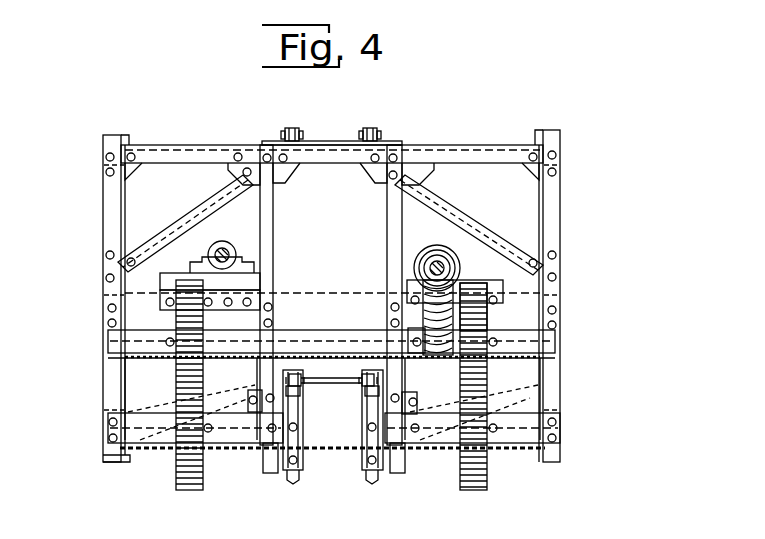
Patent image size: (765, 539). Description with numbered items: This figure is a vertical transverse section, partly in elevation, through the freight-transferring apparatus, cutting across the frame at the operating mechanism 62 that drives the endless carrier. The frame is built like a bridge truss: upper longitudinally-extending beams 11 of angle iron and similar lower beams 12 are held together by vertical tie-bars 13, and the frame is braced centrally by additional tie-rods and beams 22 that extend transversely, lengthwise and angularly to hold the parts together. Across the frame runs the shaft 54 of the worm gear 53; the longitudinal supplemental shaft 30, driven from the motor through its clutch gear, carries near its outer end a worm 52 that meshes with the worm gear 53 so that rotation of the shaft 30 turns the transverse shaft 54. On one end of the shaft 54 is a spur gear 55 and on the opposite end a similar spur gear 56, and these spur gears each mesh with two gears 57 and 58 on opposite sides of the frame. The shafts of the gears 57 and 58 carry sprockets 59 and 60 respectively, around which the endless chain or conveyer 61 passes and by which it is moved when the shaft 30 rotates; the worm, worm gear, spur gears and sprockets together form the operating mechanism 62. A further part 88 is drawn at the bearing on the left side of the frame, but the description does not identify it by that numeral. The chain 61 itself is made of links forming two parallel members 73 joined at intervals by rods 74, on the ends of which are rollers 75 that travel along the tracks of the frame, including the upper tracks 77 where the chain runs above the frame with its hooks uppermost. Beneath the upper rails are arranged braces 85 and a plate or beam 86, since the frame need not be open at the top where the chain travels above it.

The upper longitudinally-extending beams 11 is at (126, 140).
The lower beams 12 is at (124, 465).
The vertical tie-bars 13 is at (556, 213).
The tie-rods and beams 22 is at (175, 228).
The supplemental shaft 30 is at (445, 268).
The worm 52 is at (428, 250).
The worm gear 53 is at (425, 314).
The shaft of the worm gear 54 is at (292, 338).
The spur gear 55 is at (480, 322).
The spur gear 56 is at (200, 325).
The gear 57 is at (487, 472).
The gear 58 is at (182, 470).
The sprocket 59 is at (372, 484).
The sprocket 60 is at (297, 484).
The endless chain or conveyer 61 is at (301, 386).
The operating mechanism 62 is at (331, 295).
The parallel members 73 is at (292, 374).
The rods 74 is at (325, 378).
The rollers 75 is at (364, 388).
The upper tracks 77 is at (280, 138).
The braces 85 is at (450, 156).
The plate or beam 86 is at (315, 142).
The shaft bearing 88 is at (220, 248).